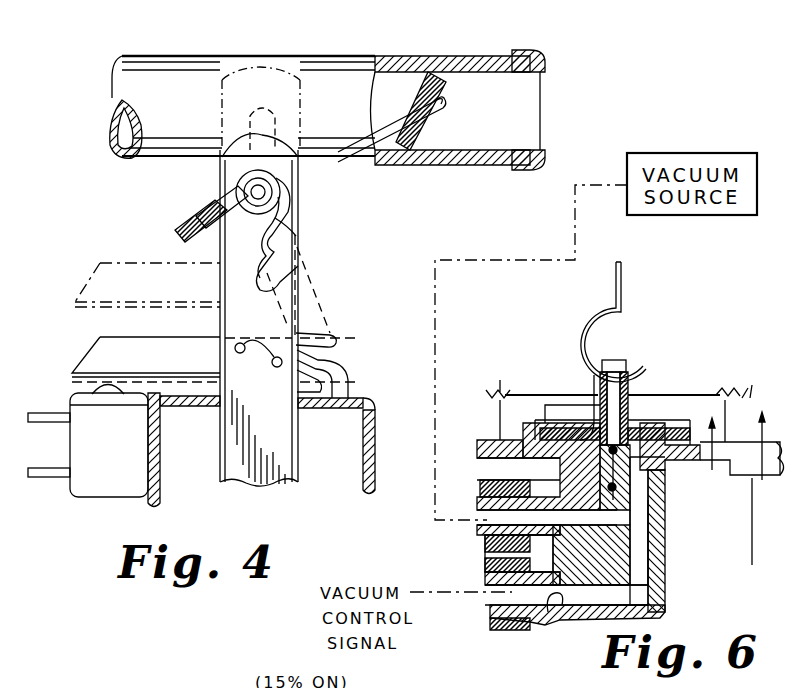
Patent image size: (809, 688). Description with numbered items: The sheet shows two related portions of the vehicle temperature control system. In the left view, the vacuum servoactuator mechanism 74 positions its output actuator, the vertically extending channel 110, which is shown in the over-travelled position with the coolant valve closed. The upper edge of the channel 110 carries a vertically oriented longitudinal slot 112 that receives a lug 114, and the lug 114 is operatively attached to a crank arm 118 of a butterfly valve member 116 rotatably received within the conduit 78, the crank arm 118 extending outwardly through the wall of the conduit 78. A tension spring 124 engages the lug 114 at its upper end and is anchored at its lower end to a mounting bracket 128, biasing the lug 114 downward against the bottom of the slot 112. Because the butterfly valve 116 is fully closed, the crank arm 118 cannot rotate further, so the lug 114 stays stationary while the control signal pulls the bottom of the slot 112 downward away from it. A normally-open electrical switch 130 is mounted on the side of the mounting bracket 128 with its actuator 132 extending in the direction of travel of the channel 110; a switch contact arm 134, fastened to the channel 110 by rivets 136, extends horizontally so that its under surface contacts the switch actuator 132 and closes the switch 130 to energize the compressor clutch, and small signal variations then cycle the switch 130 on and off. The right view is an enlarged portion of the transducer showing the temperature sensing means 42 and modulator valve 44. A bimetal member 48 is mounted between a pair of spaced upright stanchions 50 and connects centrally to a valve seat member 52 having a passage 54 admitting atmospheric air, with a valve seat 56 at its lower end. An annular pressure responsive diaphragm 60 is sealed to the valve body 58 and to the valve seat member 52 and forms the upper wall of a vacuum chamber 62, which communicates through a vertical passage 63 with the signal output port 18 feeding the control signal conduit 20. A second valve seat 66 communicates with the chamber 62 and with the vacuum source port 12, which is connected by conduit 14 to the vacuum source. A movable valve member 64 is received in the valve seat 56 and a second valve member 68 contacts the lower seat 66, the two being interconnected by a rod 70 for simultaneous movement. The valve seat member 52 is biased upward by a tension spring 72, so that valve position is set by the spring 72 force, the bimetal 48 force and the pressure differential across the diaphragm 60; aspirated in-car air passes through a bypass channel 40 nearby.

In FIG. 4, the conduit 78 is at (173, 56).
In FIG. 4, the butterfly valve member 116 is at (420, 88).
In FIG. 4, the crank arm 118 is at (333, 166).
In FIG. 4, the lug 114 is at (240, 222).
In FIG. 4, the longitudinal slot 112 is at (250, 252).
In FIG. 4, the tension spring 124 is at (298, 236).
In FIG. 4, the rivets 136 is at (262, 344).
In FIG. 4, the mounting bracket 128 is at (354, 398).
In FIG. 4, the switch contact arm 134 is at (92, 348).
In FIG. 4, the switch actuator 132 is at (88, 391).
In FIG. 4, the normally-open electrical switch 130 is at (70, 418).
In FIG. 4, the actuator channel 110 is at (283, 432).
In FIG. 4, the vacuum servoactuator mechanism 74 is at (376, 452).
In FIG. 6, the bypass channel 40 is at (742, 488).
In FIG. 6, the temperature sensing means 42 is at (516, 362).
In FIG. 6, the tension spring 72 is at (622, 290).
In FIG. 6, the passage 54 is at (617, 360).
In FIG. 6, the modulator valve 44 is at (672, 392).
In FIG. 6, the bimetal member 48 is at (716, 390).
In FIG. 6, the stanchions 50 is at (499, 388).
In FIG. 6, the valve seat member 52 is at (600, 385).
In FIG. 6, the movable valve member 64 is at (600, 392).
In FIG. 6, the rod 70 is at (578, 432).
In FIG. 6, the vacuum chamber 62 is at (560, 467).
In FIG. 6, the fluid pressure supply port 12 is at (490, 512).
In FIG. 6, the conduit 14 is at (488, 552).
In FIG. 6, the conduit 20 is at (488, 576).
In FIG. 6, the second valve seat 66 is at (575, 577).
In FIG. 6, the second valve member 68 is at (632, 505).
In FIG. 6, the valve seat 56 is at (657, 482).
In FIG. 6, the annular pressure responsive diaphragm 60 is at (668, 458).
In FIG. 6, the valve body 58 is at (668, 575).
In FIG. 6, the vertical passage 63 is at (652, 588).
In FIG. 6, the fluid pressure signal output port 18 is at (548, 612).